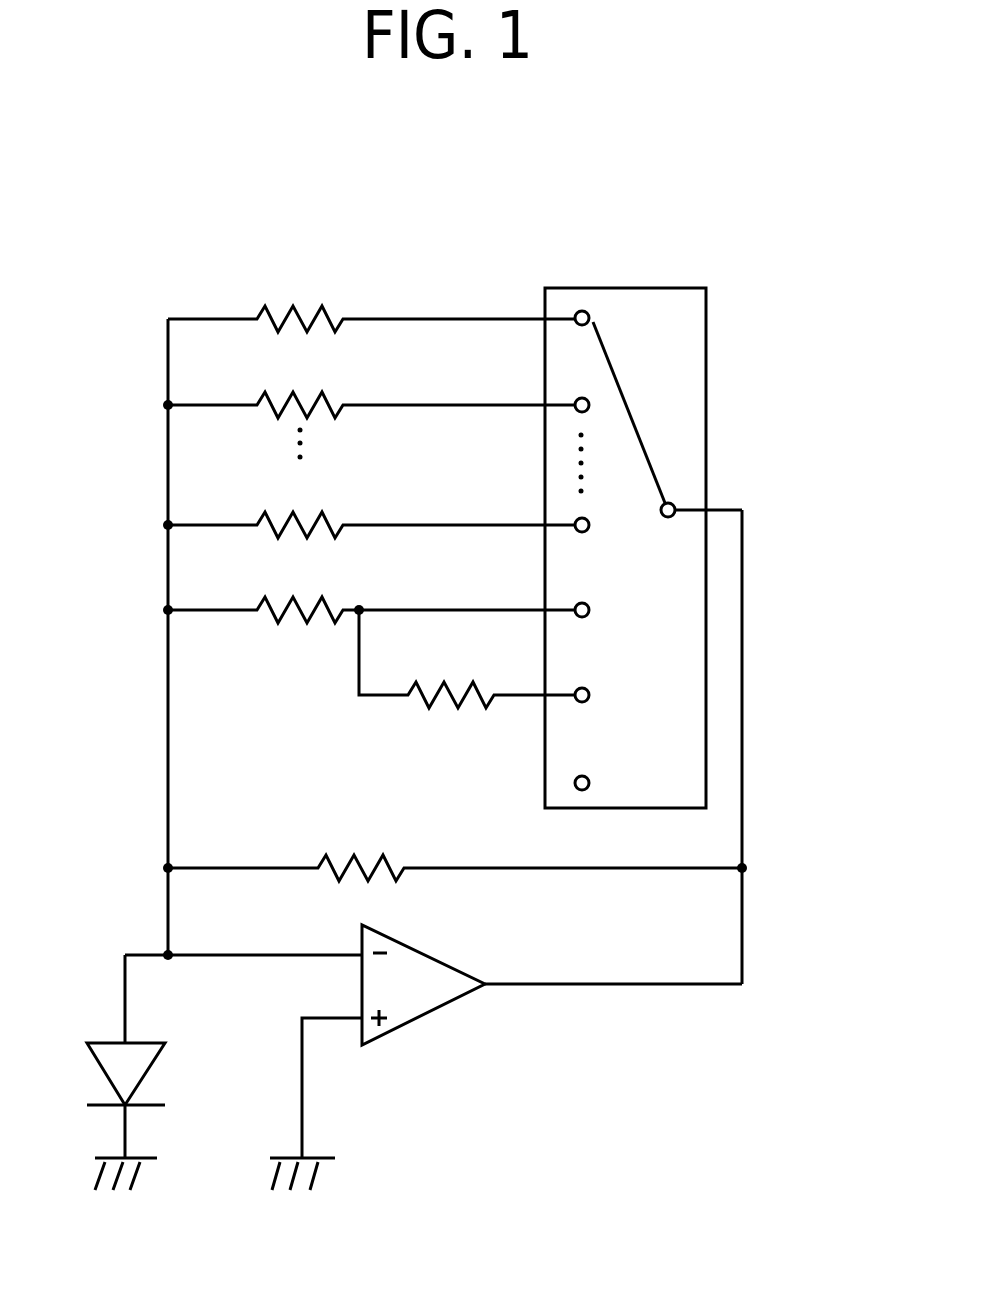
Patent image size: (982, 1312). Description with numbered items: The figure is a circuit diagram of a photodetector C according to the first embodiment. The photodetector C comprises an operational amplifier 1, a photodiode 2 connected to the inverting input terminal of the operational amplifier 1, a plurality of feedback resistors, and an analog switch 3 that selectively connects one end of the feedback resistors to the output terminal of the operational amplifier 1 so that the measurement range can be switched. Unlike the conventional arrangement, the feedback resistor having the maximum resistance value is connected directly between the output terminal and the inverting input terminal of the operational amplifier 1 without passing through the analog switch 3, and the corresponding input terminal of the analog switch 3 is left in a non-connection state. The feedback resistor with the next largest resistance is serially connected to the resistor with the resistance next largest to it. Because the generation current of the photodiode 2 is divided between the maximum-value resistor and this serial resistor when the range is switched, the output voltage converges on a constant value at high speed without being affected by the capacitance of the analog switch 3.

The operational amplifier 1 is at (423, 1015).
The photodiode 2 is at (148, 1072).
The analog switch 3 is at (627, 288).
The photodetector C is at (785, 257).